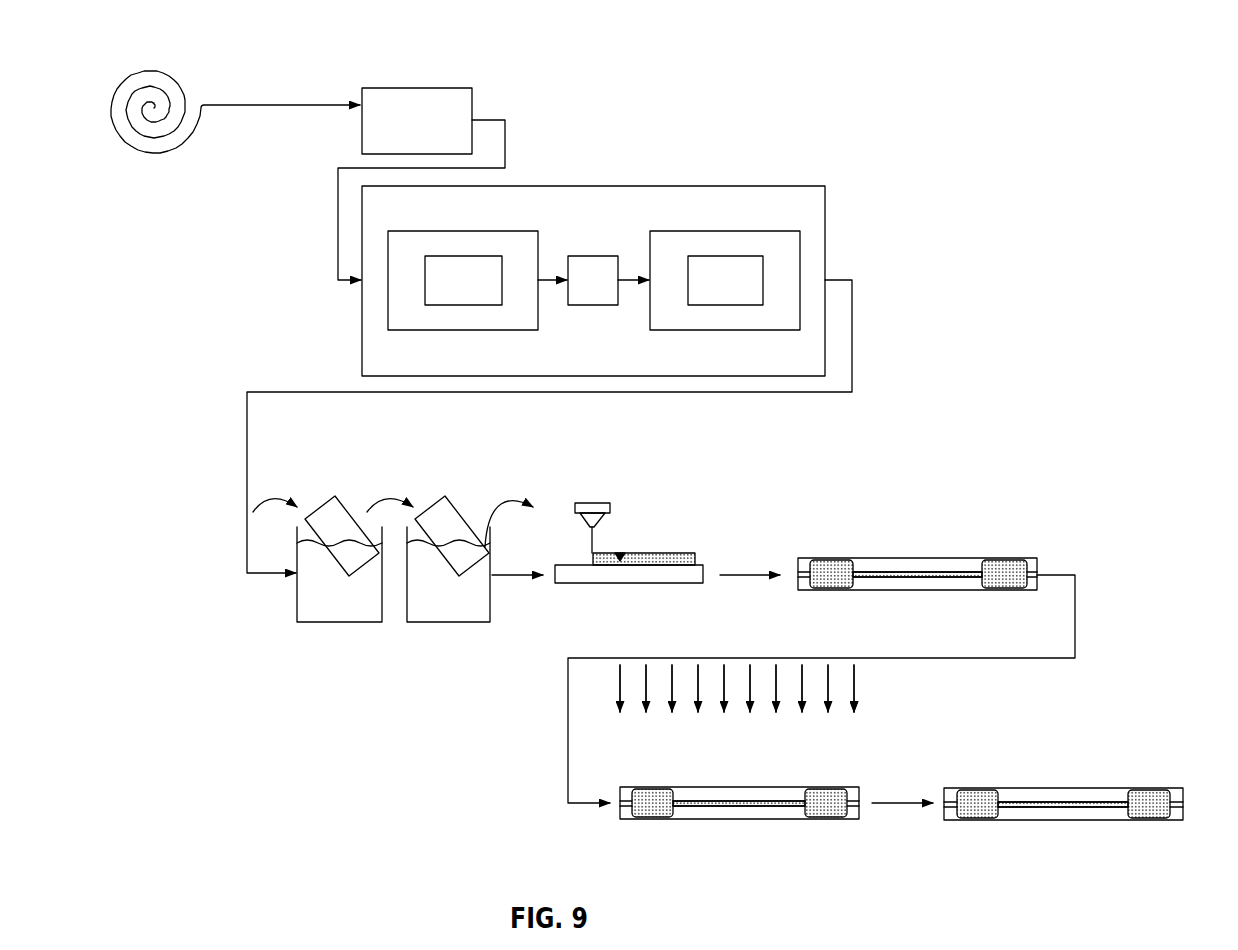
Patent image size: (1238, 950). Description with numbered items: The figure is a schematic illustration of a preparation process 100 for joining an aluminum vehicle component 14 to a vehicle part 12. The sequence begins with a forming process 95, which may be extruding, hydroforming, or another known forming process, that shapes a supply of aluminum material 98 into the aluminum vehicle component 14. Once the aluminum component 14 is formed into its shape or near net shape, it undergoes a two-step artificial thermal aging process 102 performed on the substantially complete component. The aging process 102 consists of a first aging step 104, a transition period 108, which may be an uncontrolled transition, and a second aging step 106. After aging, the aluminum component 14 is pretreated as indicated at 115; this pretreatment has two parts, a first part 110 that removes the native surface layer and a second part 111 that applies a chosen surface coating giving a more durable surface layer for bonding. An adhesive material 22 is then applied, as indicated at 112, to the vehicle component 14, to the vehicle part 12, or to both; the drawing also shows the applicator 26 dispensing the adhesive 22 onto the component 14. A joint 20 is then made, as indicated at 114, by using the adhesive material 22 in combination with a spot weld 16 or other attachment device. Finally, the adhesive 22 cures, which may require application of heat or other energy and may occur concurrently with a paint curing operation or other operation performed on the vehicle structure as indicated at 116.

The vehicle part 12 is at (925, 565).
The aluminum vehicle component 14 is at (416, 117).
The spot weld 16 is at (828, 565).
The joint 20 is at (779, 590).
The adhesive material 22 is at (650, 553).
The dispenser 26 is at (620, 553).
The forming process 95 is at (431, 81).
The aluminum material 98 is at (109, 71).
The preparation process 100 is at (908, 93).
The two-step artificial thermal aging process 102 is at (570, 186).
The first aging step 104 is at (448, 230).
The second aging step 106 is at (718, 230).
The transition period 108 is at (595, 256).
The first part of the pretreatment process 110 is at (276, 590).
The second part of the pretreatment process 111 is at (398, 640).
The adhesive application 112 is at (669, 507).
The joining process 114 is at (1013, 521).
The pretreatment process 115 is at (518, 462).
The curing operation 116 is at (556, 795).